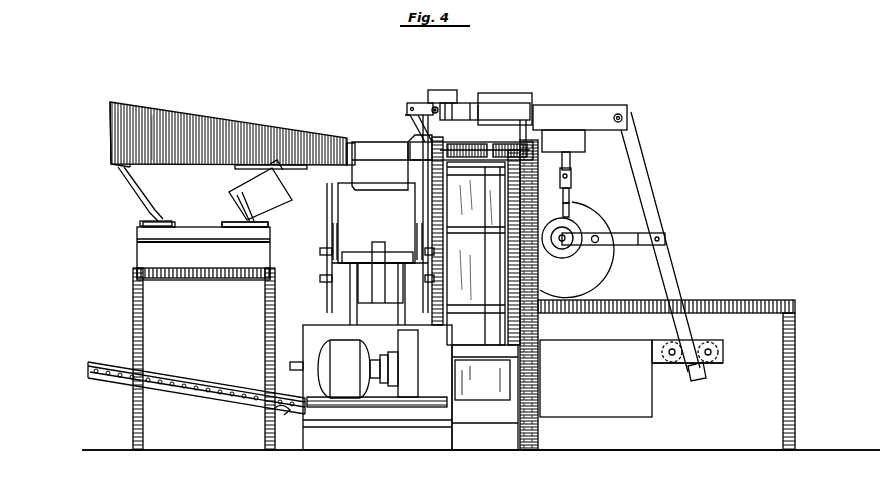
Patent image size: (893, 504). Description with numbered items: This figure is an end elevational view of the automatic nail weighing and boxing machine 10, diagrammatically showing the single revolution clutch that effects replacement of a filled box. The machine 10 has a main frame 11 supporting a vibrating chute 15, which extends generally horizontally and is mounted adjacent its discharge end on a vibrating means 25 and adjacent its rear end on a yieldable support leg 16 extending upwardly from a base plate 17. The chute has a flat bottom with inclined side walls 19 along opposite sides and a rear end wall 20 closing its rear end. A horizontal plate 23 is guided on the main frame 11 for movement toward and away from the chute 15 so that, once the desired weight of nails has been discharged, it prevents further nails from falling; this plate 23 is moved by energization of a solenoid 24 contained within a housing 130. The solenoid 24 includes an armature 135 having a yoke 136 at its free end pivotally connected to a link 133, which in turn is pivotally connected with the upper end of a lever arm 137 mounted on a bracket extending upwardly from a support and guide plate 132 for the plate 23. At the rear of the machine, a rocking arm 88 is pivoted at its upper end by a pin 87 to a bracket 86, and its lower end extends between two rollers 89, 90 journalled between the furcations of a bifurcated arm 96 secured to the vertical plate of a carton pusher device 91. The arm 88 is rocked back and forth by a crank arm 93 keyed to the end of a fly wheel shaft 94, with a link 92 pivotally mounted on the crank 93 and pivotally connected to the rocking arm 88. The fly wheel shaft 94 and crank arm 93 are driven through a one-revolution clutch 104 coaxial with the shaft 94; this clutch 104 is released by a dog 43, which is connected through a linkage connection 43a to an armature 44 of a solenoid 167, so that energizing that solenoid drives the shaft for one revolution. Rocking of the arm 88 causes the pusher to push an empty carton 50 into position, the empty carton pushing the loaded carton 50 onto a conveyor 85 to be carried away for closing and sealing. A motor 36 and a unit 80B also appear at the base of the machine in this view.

The automatic nail weighing and boxing machine 10 is at (548, 332).
The main frame 11 is at (345, 448).
The vibrating chute 15 is at (245, 122).
The yieldable support leg 16 is at (132, 200).
The base plate 17 is at (137, 250).
The inclined side walls 19 is at (160, 118).
The rear end wall 20 is at (111, 136).
The horizontal plate 23 is at (352, 145).
The solenoid 24 is at (476, 106).
The vibrating means 25 is at (266, 199).
The motor 36 is at (356, 374).
The dog 43 is at (574, 212).
The linkage connection 43a is at (572, 186).
The armature 44 is at (570, 162).
The carton 50 is at (455, 203).
The gear box 80B is at (497, 371).
The conveyor 85 is at (205, 378).
The bracket 86 is at (567, 107).
The pin 87 is at (626, 117).
The rocking arm 88 is at (650, 192).
The roller 89 is at (670, 348).
The roller 90 is at (710, 350).
The carton pusher device 91 is at (665, 369).
The link 92 is at (628, 246).
The crank arm 93 is at (580, 237).
The fly wheel shaft 94 is at (562, 250).
The bifurcated arm 96 is at (724, 361).
The one-revolution clutch 104 is at (572, 252).
The housing 130 is at (520, 116).
The support and guide plate 132 is at (470, 178).
The link 133 is at (417, 103).
The armature 135 is at (460, 108).
The yoke 136 is at (440, 100).
The lever arm 137 is at (411, 126).
The solenoid 167 is at (584, 141).